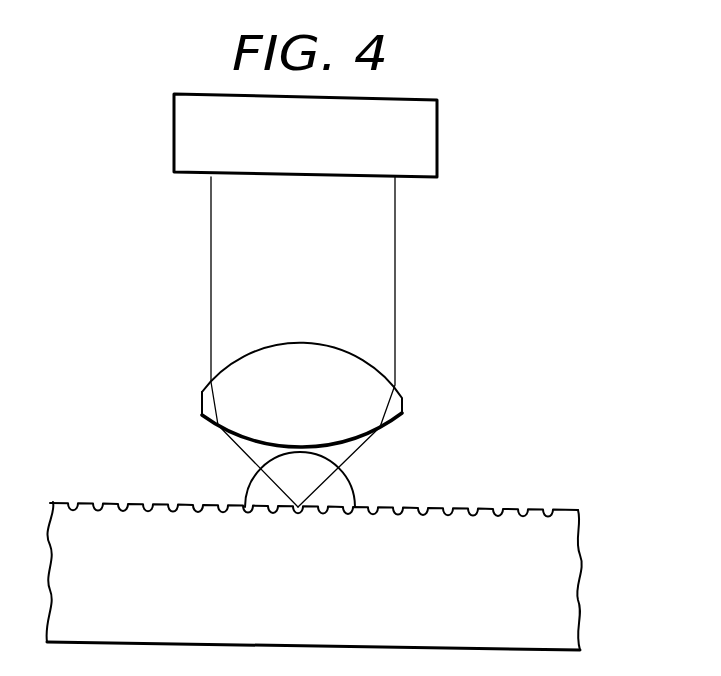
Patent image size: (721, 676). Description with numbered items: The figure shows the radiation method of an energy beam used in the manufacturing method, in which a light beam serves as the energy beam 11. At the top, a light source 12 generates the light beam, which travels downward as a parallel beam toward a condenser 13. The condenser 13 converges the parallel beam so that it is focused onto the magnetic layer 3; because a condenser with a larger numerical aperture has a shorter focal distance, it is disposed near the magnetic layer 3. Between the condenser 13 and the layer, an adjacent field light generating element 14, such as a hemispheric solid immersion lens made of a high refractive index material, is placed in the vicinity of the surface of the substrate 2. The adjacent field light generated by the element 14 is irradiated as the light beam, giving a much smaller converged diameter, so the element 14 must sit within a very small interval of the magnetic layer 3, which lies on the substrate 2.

The light source 12 is at (423, 143).
The energy beam 11 is at (382, 270).
The condenser 13 is at (378, 400).
The adjacent field light generating element 14 is at (342, 493).
The magnetic layer 3 is at (532, 510).
The substrate 2 is at (565, 593).